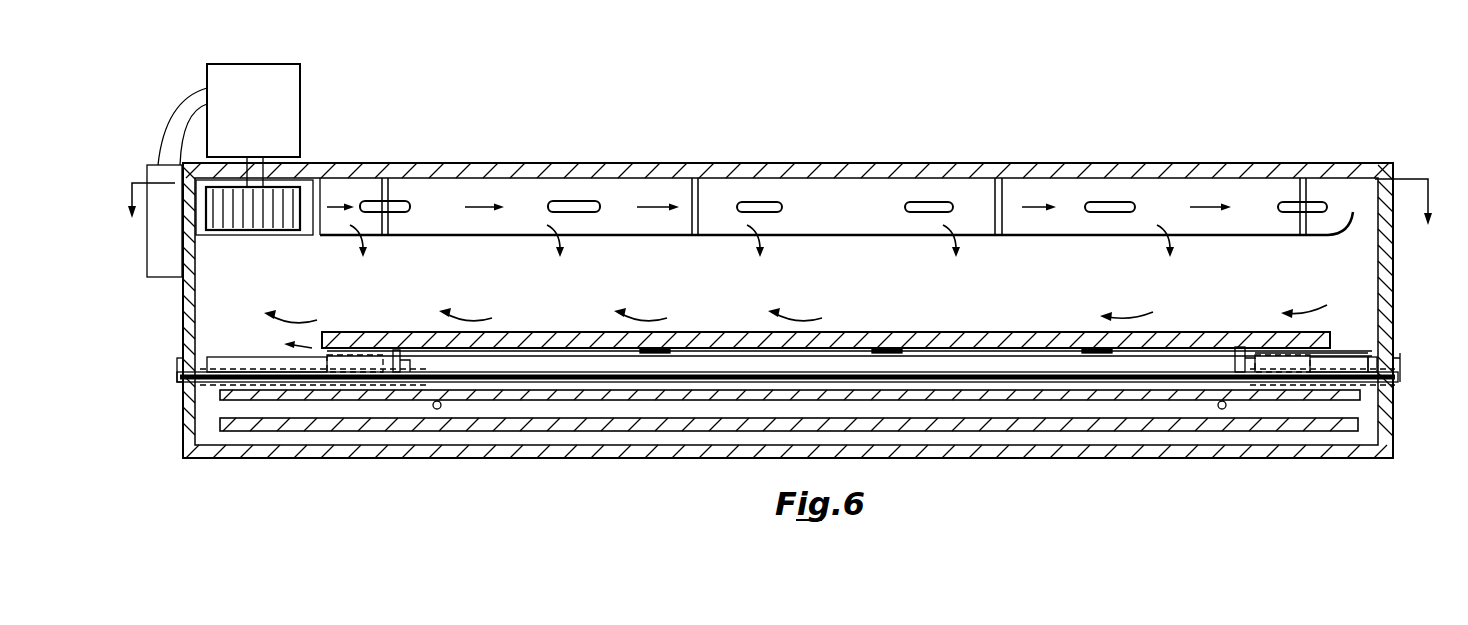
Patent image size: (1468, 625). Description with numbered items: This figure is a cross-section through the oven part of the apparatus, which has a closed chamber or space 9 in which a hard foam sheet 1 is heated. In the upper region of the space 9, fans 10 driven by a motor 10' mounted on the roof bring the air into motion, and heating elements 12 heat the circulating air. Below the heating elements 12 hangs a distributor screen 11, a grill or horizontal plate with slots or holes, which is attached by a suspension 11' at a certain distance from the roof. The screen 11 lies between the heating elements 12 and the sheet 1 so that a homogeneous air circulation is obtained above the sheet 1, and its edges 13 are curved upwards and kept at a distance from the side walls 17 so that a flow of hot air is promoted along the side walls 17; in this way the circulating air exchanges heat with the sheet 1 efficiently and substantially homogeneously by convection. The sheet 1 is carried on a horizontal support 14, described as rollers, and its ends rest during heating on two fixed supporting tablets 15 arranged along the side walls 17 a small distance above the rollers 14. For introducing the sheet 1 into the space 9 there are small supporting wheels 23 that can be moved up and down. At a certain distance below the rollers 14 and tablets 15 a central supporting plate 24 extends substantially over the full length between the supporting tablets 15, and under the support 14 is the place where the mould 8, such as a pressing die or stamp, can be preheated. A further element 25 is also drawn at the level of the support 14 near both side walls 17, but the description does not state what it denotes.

The hard foam sheet 1 is at (873, 338).
The mould 8 is at (297, 430).
The closed chamber or space 9 is at (1037, 294).
The fan 10 is at (282, 178).
The motor 10' is at (265, 125).
The distributor screen 11 is at (824, 181).
The suspension 11' is at (844, 161).
The heating element 12 is at (758, 200).
The edge of the distributor screen 13 is at (1357, 212).
The horizontal support 14 is at (1343, 365).
The supporting tablet 15 is at (352, 360).
The side wall 17 is at (1385, 267).
The supporting wheel 23 is at (400, 365).
The central supporting plate 24 is at (953, 400).
The carrier rail 25 is at (235, 375).